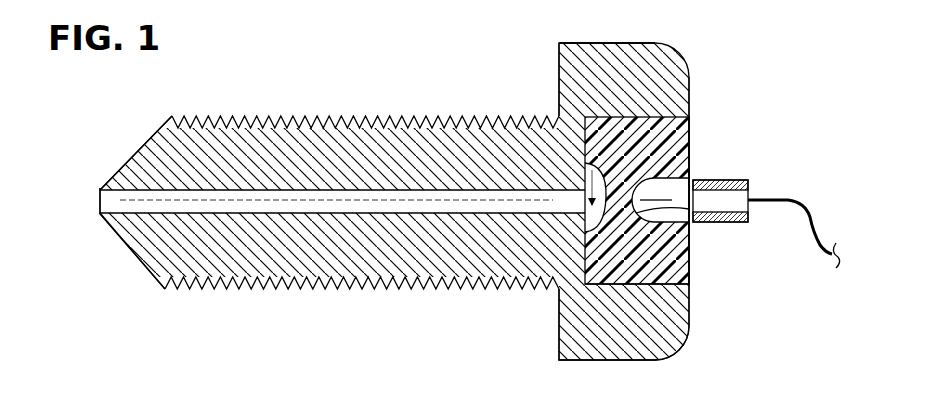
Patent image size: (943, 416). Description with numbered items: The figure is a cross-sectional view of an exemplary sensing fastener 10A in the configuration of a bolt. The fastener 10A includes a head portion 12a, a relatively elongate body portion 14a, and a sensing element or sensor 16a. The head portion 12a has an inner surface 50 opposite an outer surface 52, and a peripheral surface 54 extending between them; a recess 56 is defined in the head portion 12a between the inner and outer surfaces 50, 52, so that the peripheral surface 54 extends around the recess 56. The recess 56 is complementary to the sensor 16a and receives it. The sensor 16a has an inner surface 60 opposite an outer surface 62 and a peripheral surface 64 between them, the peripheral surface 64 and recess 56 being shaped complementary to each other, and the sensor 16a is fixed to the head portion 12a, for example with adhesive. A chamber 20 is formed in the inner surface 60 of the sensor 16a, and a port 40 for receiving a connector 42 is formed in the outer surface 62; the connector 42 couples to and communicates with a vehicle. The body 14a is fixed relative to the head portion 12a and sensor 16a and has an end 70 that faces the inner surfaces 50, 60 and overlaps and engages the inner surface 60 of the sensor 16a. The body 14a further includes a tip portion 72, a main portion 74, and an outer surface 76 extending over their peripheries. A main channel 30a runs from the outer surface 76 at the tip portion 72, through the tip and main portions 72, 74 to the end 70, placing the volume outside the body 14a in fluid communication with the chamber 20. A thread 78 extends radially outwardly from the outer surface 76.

The sensing fastener 10A is at (598, 32).
The head portion 12a is at (655, 38).
The body portion 14a is at (147, 140).
The sensing element 16a is at (697, 279).
The chamber 20 is at (584, 162).
The main channel 30a is at (108, 200).
The port 40 is at (701, 222).
The connector 42 is at (779, 196).
The inner surface 50 is at (559, 78).
The outer surface 52 is at (689, 95).
The peripheral surface 54 is at (583, 43).
The recess 56 is at (688, 133).
The inner surface 60 is at (585, 284).
The outer surface 62 is at (689, 163).
The peripheral surface 64 is at (608, 284).
The end 70 is at (548, 228).
The tip portion 72 is at (128, 172).
The main portion 74 is at (323, 250).
The outer surface 76 is at (131, 247).
The thread 78 is at (258, 117).